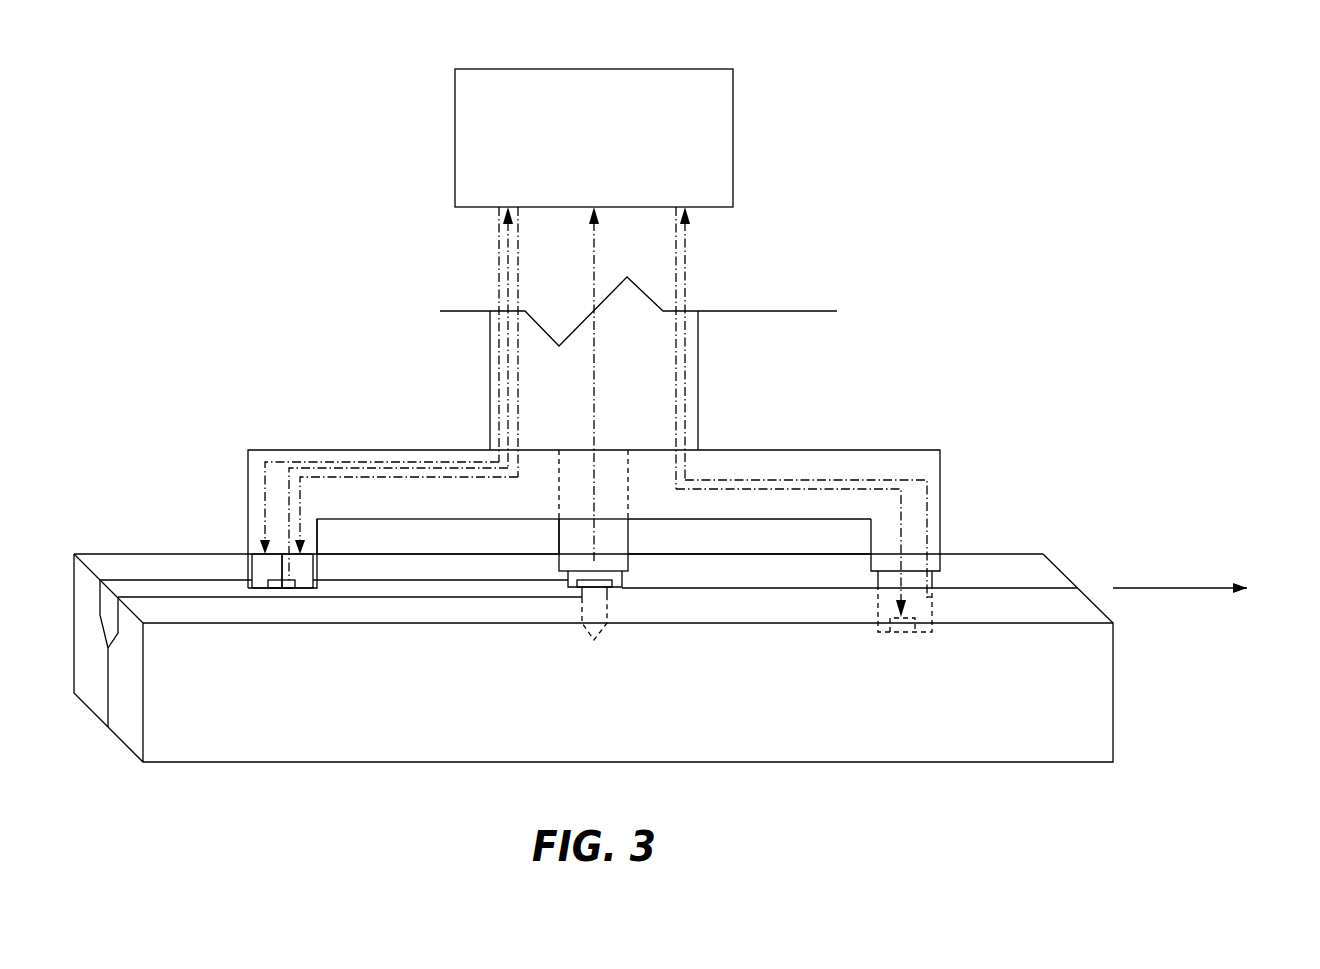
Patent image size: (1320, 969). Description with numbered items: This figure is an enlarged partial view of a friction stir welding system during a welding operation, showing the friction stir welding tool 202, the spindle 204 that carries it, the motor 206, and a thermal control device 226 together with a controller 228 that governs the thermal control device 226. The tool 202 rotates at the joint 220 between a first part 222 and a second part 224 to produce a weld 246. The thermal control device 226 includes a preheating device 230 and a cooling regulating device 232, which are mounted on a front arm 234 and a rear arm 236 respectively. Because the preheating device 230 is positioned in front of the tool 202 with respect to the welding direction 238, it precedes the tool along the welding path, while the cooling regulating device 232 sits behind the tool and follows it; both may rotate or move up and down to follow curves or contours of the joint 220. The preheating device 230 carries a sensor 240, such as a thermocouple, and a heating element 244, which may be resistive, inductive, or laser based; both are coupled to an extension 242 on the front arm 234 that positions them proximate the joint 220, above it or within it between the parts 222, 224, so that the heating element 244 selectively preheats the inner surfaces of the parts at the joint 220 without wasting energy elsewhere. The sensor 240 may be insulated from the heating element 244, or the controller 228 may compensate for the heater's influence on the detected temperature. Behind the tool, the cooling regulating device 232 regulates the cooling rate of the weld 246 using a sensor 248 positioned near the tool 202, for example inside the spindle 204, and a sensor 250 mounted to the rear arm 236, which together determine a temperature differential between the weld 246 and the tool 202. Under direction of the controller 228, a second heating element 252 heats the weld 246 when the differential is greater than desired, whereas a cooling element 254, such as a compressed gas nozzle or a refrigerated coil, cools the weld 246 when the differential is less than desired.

The friction stir welding tool 202 is at (613, 645).
The spindle 204 is at (643, 568).
The motor 206 is at (490, 398).
The joint 220 is at (760, 589).
The first part 222 is at (1065, 570).
The second part 224 is at (1107, 612).
The thermal control device 226 is at (493, 497).
The controller 228 is at (733, 112).
The preheating device 230 is at (960, 571).
The cooling regulating device 232 is at (239, 593).
The front arm 234 is at (820, 450).
The rear arm 236 is at (377, 450).
The welding direction 238 is at (1173, 588).
The sensor 240 is at (932, 608).
The extension 242 is at (900, 607).
The heating element 244 is at (902, 632).
The weld 246 is at (482, 590).
The sensor 248 is at (612, 583).
The sensor 250 is at (283, 590).
The second heating element 252 is at (305, 588).
The cooling element 254 is at (260, 588).